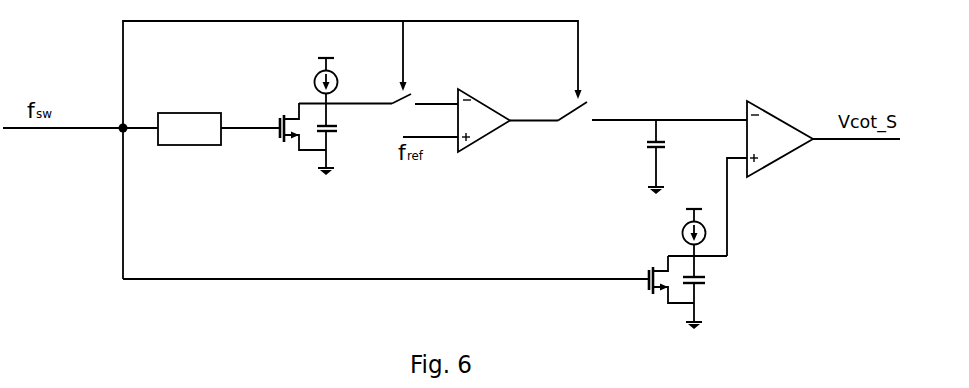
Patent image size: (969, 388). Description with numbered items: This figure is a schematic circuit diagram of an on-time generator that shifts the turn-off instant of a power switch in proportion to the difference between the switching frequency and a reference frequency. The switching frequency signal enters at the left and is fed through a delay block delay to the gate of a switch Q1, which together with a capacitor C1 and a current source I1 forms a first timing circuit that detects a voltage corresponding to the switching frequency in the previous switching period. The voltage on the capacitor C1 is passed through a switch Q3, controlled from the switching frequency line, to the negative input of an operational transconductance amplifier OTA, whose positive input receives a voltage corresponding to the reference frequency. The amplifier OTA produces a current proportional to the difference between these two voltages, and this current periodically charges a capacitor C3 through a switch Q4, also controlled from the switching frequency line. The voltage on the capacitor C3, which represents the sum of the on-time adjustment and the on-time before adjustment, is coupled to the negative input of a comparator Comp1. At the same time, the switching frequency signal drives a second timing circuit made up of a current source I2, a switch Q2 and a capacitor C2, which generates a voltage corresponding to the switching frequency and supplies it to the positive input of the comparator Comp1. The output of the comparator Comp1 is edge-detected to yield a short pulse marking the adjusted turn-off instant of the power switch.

The delay block delay is at (189, 129).
The switch Q1 is at (298, 132).
The current source I1 is at (315, 80).
The capacitor C1 is at (339, 140).
The switch Q3 is at (425, 111).
The operational transconductance amplifier OTA is at (484, 120).
The switch Q4 is at (652, 126).
The capacitor C3 is at (668, 157).
The comparator Comp1 is at (780, 139).
The current source I2 is at (687, 232).
The switch Q2 is at (669, 287).
The capacitor C2 is at (708, 292).